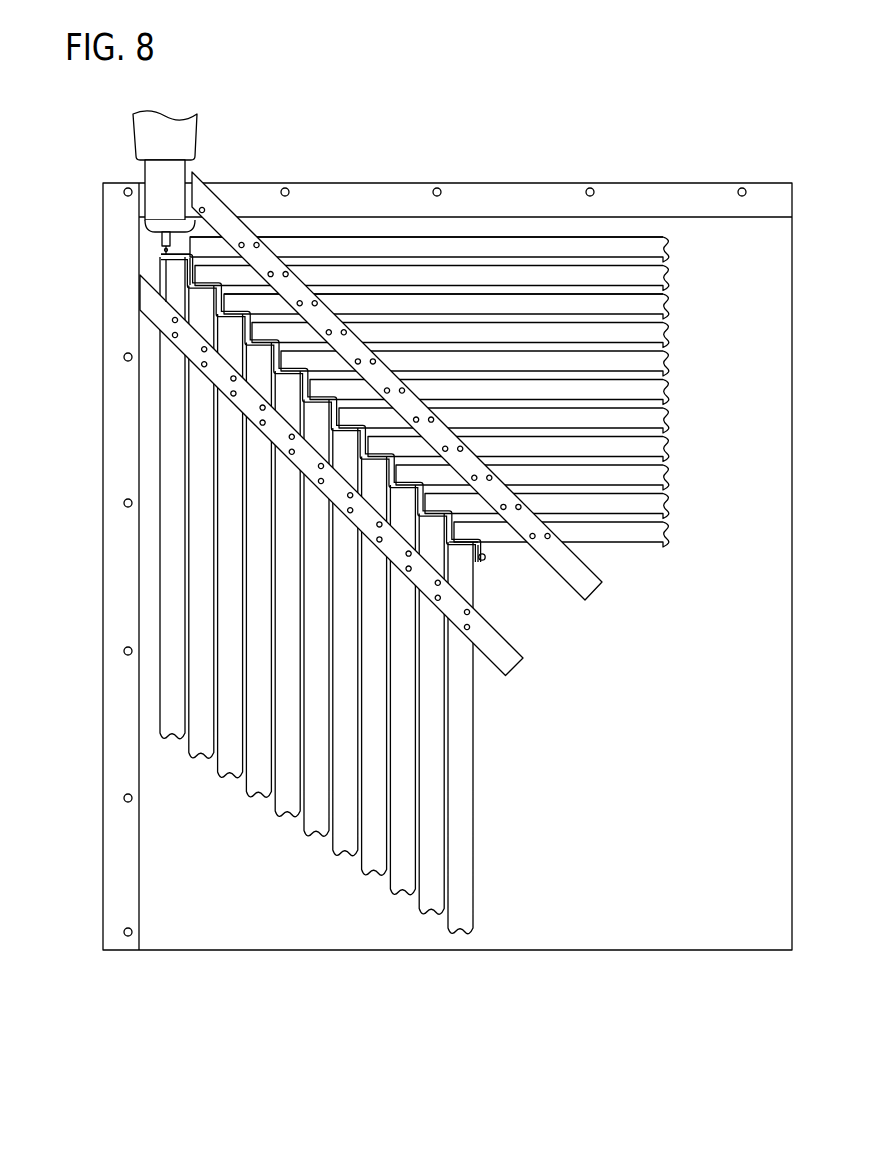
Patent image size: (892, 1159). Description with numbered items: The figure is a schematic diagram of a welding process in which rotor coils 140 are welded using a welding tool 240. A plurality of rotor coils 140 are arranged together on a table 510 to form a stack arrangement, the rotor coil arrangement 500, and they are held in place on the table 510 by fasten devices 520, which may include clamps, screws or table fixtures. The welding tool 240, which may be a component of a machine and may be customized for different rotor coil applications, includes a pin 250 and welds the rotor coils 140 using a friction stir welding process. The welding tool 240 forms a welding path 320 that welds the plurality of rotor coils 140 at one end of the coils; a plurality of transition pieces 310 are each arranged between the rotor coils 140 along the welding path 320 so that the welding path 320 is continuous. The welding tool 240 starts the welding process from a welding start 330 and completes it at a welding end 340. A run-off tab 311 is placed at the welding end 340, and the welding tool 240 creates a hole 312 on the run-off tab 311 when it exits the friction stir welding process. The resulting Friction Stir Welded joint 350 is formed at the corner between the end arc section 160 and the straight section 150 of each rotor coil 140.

The rotor coils 140 is at (694, 340).
The straight section 150 is at (463, 748).
The end arc section 160 is at (508, 277).
The welding tool 240 is at (157, 147).
The pin 250 is at (162, 236).
The transition pieces 310 is at (209, 262).
The run-off tab 311 is at (488, 572).
The hole 312 is at (490, 567).
The welding path 320 is at (187, 313).
The welding start 330 is at (147, 272).
The welding end 340 is at (512, 565).
The Friction Stir Welded joint 350 is at (163, 252).
The rotor coil arrangement 500 is at (640, 215).
The table 510 is at (737, 770).
The fasten devices 520 is at (593, 590).